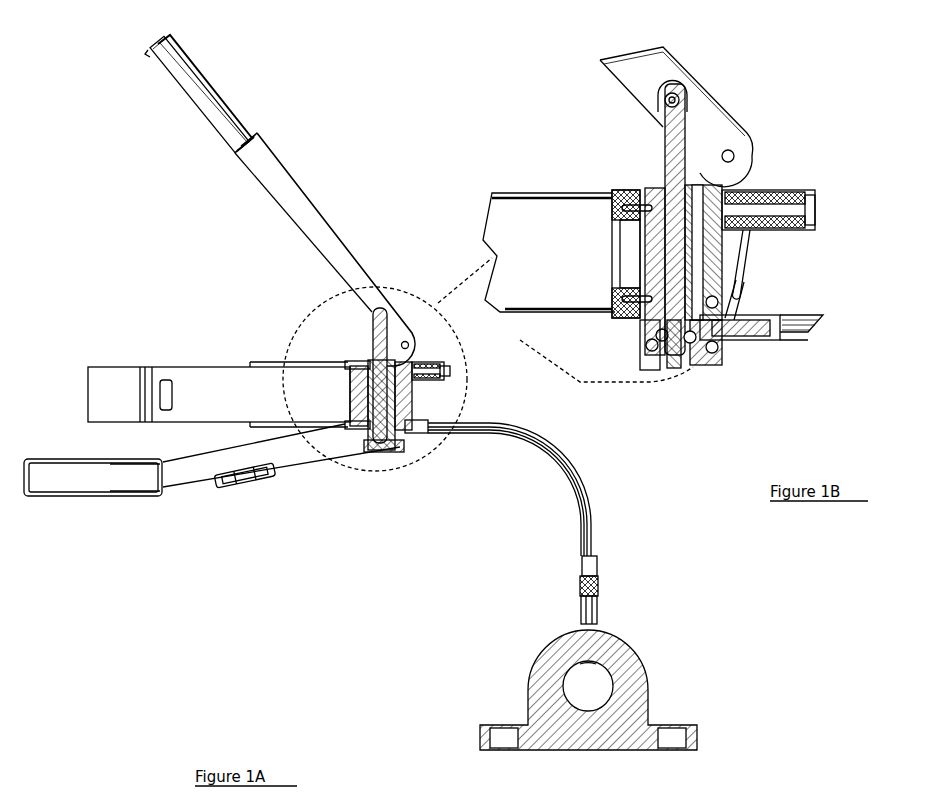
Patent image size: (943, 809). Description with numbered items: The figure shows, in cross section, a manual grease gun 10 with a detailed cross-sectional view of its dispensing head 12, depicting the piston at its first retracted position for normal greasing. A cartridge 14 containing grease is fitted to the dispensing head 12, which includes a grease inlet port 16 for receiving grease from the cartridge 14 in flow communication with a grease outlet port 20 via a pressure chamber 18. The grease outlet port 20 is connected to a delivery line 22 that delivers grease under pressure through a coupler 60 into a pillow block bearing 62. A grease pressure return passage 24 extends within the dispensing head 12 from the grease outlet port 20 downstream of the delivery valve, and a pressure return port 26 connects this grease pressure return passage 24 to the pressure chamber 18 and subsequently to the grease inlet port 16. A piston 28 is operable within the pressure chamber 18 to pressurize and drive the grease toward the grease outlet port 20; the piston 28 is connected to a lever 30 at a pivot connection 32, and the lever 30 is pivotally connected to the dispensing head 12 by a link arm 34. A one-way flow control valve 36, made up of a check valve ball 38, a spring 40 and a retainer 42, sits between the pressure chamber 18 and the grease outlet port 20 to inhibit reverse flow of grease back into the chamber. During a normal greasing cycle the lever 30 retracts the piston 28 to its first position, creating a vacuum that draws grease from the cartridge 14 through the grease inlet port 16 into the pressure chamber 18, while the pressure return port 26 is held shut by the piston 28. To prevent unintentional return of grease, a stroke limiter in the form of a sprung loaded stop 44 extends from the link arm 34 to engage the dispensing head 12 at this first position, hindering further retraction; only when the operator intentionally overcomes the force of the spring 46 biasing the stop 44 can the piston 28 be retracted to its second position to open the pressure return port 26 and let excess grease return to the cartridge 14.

In FIG. 1A, the manual grease gun 10 is at (200, 229).
In FIG. 1B, the dispensing head 12 is at (658, 180).
In FIG. 1A, the cartridge 14 is at (207, 366).
In FIG. 1B, the cartridge 14 is at (508, 193).
In FIG. 1B, the grease inlet port 16 is at (627, 197).
In FIG. 1B, the pressure chamber 18 is at (640, 333).
In FIG. 1B, the grease outlet port 20 is at (712, 362).
In FIG. 1A, the delivery line 22 is at (576, 508).
In FIG. 1B, the delivery line 22 is at (817, 323).
In FIG. 1B, the grease pressure return passage 24 is at (777, 338).
In FIG. 1B, the pressure return port 26 is at (722, 236).
In FIG. 1B, the piston 28 is at (660, 140).
In FIG. 1A, the lever 30 is at (292, 177).
In FIG. 1B, the lever 30 is at (640, 58).
In FIG. 1B, the pivot connection 32 is at (680, 100).
In FIG. 1B, the link arm 34 is at (742, 291).
In FIG. 1B, the one-way flow control valve 36 is at (664, 398).
In FIG. 1B, the check valve ball 38 is at (660, 363).
In FIG. 1B, the spring 40 is at (673, 350).
In FIG. 1B, the retainer 42 is at (678, 363).
In FIG. 1B, the sprung loaded stop 44 is at (815, 210).
In FIG. 1B, the spring 46 is at (760, 202).
In FIG. 1A, the coupler 60 is at (599, 601).
In FIG. 1A, the pillow block bearing 62 is at (640, 670).